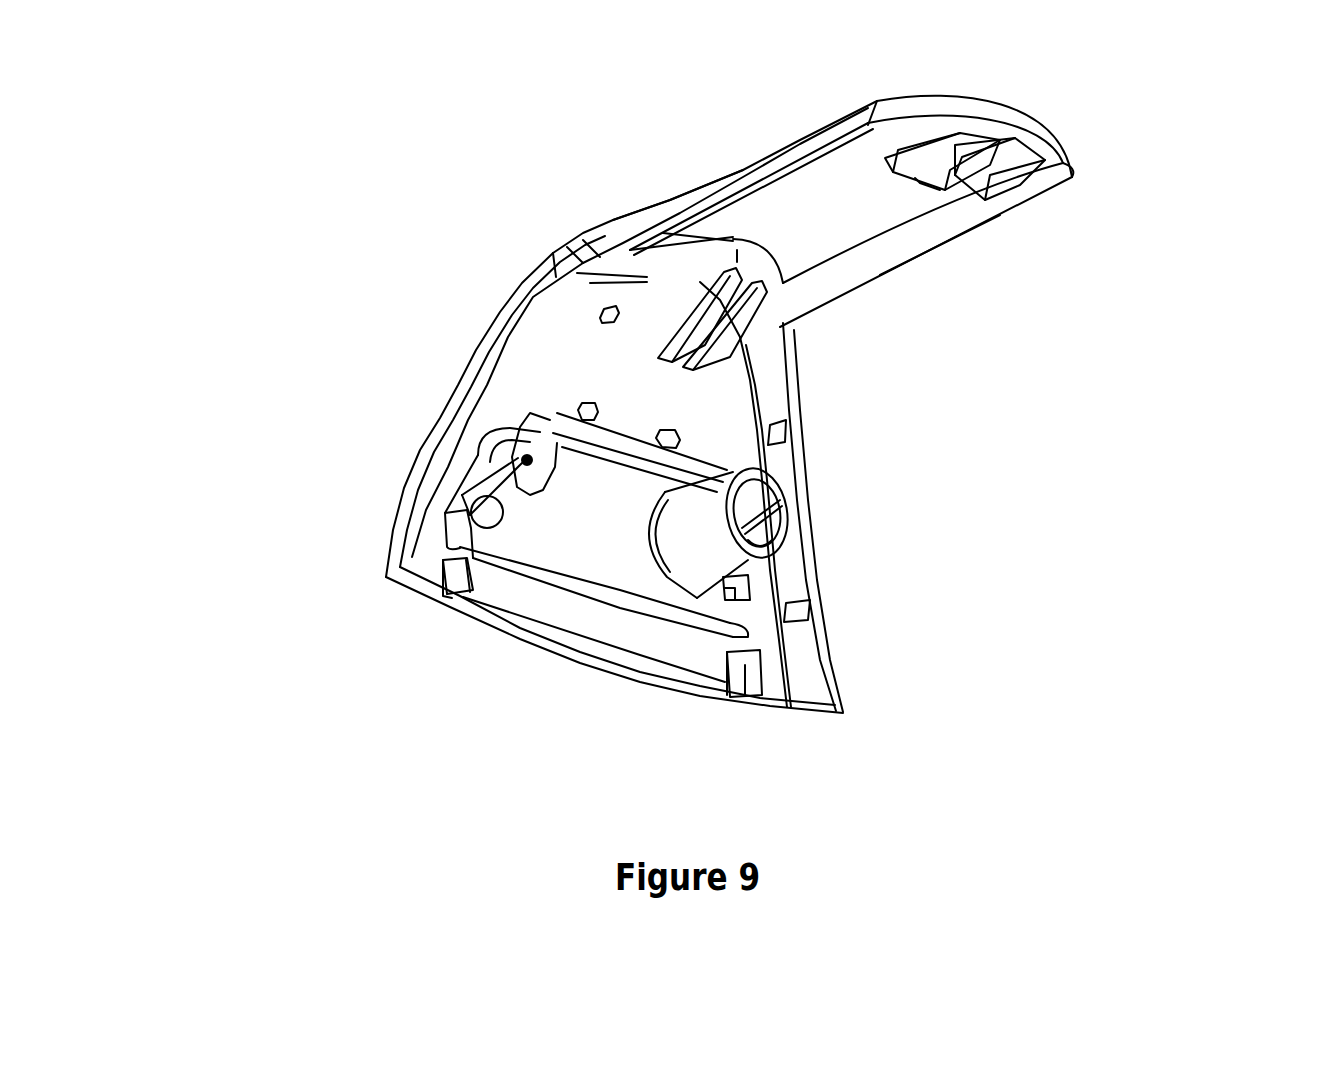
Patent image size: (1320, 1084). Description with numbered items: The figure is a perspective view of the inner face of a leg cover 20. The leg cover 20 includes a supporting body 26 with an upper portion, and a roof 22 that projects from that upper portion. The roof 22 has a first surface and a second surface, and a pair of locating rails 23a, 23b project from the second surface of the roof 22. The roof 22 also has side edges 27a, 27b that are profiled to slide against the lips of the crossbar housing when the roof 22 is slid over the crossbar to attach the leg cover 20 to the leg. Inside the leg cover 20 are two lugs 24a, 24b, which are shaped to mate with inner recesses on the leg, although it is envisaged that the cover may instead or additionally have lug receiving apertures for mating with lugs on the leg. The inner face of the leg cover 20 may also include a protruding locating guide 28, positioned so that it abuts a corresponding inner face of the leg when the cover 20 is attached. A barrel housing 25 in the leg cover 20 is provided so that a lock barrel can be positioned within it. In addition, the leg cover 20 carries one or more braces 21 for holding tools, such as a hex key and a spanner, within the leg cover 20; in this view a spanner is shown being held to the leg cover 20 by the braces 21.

The leg cover 20 is at (458, 357).
The braces 21 is at (603, 411).
The roof 22 is at (828, 172).
The locating rail 23a is at (965, 157).
The locating rail 23b is at (1005, 170).
The lug 24a is at (457, 577).
The lug 24b is at (762, 676).
The barrel housing 25 is at (710, 525).
The supporting body 26 is at (598, 370).
The side edge 27a is at (670, 211).
The side edge 27b is at (955, 243).
The locating guide 28 is at (487, 487).